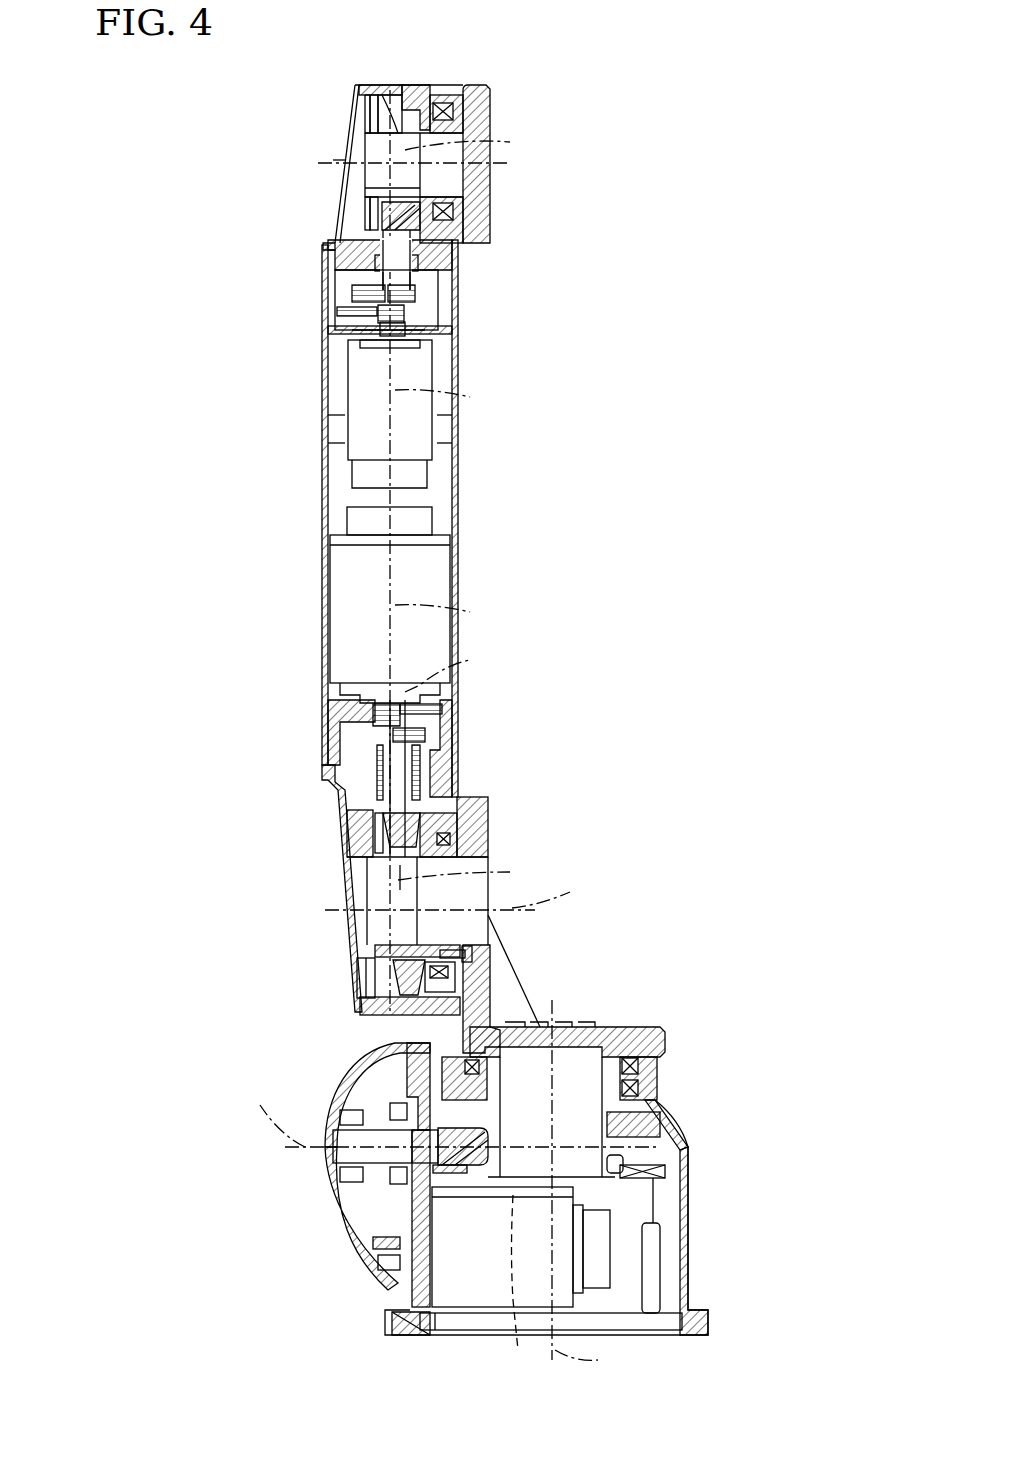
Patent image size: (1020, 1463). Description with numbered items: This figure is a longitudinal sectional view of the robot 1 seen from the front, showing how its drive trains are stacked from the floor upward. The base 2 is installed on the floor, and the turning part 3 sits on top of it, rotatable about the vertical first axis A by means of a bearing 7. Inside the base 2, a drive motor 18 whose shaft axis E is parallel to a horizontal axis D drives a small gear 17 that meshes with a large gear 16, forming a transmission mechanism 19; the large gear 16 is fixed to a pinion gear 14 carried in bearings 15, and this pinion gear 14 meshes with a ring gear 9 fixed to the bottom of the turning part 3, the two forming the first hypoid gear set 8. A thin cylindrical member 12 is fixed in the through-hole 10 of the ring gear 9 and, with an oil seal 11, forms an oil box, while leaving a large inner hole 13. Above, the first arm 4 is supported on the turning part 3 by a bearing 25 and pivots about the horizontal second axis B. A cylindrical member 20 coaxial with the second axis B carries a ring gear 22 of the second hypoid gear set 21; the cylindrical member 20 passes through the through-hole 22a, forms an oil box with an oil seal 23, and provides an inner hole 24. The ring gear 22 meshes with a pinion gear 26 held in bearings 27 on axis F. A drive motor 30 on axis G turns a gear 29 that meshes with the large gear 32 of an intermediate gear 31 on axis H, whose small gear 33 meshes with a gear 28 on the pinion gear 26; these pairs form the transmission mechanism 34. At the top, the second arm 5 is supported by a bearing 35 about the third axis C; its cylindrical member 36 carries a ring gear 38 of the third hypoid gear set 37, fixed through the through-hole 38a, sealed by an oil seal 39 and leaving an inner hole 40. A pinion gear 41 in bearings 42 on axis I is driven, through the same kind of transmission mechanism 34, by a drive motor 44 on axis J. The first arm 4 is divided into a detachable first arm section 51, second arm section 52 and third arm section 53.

The robot 1 is at (207, 170).
The base 2 is at (693, 1283).
The turning part 3 is at (650, 1026).
The first arm 4 is at (318, 652).
The second arm 5 is at (495, 100).
The bearing 7 is at (660, 1078).
The first hypoid gear set 8 is at (492, 1140).
The ring gear 9 is at (660, 1135).
The through-hole 10 is at (602, 1120).
The oil seal 11 is at (675, 1155).
The cylindrical member 12 is at (612, 1160).
The inner hole 13 is at (650, 1182).
The pinion gear 14 is at (462, 1162).
The bearings 15 is at (375, 1190).
The large gear 16 is at (422, 1224).
The small gear 17 is at (398, 1290).
The drive motor 18 is at (466, 1318).
The transmission mechanism 19 is at (373, 1242).
The cylindrical member 20 is at (378, 970).
The second hypoid gear set 21 is at (378, 860).
The ring gear 22 is at (408, 978).
The through-hole 22a is at (445, 945).
The oil seal 23 is at (378, 830).
The inner hole 24 is at (357, 962).
The bearing 25 is at (470, 1012).
The pinion gear 26 is at (392, 842).
The bearings 27 is at (422, 770).
The gear 28 is at (416, 294).
The gear 29 is at (404, 314).
The drive motor 30 is at (452, 568).
The intermediate gear 31 is at (236, 272).
The large gear 32 is at (338, 312).
The small gear 33 is at (352, 293).
The transmission mechanism 34 is at (432, 328).
The bearing 35 is at (445, 103).
The cylindrical member 36 is at (386, 128).
The third hypoid gear set 37 is at (392, 98).
The ring gear 38 is at (412, 100).
The through-hole 38a is at (440, 182).
The oil seal 39 is at (366, 110).
The inner hole 40 is at (390, 188).
The pinion gear 41 is at (382, 212).
The bearings 42 is at (455, 228).
The drive motor 44 is at (432, 430).
The first arm section 51 is at (350, 808).
The second arm section 52 is at (322, 510).
The third arm section 53 is at (336, 178).
The first axis A is at (587, 1188).
The second axis B is at (458, 892).
The third axis C is at (322, 160).
The axis D is at (454, 1109).
The axis E is at (516, 1287).
The axis F is at (463, 869).
The axis G is at (442, 612).
The axis H is at (448, 668).
The axis I is at (423, 144).
The axis J is at (443, 396).